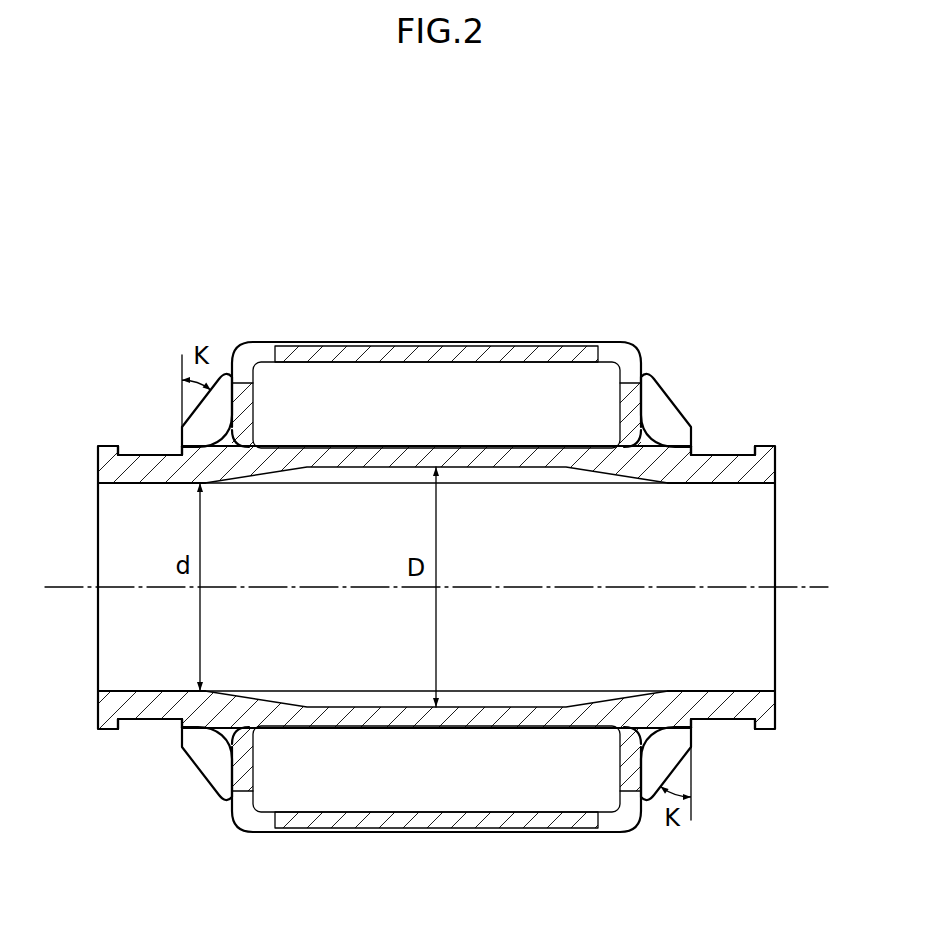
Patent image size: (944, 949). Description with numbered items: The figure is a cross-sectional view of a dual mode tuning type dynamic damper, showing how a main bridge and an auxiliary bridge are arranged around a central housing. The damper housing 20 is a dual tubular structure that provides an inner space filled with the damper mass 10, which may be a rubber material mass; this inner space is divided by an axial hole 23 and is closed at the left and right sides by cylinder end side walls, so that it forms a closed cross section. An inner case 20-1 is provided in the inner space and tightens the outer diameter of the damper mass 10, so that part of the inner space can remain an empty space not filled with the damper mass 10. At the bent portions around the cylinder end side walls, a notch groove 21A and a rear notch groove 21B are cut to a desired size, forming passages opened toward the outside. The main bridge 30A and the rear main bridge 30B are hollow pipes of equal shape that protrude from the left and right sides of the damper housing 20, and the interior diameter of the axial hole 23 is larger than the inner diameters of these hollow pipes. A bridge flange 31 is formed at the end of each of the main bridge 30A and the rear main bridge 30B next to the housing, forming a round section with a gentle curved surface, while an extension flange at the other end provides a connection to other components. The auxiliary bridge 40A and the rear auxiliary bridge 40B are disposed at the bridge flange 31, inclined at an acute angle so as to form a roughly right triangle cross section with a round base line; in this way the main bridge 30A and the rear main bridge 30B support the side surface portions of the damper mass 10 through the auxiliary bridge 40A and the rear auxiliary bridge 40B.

The damper mass 10 is at (590, 405).
The damper housing 20 is at (469, 343).
The inner case 20-1 is at (388, 355).
The notch groove 21A is at (260, 345).
The rear notch groove 21B is at (632, 355).
The axial hole 23 is at (482, 705).
The main bridge 30A is at (133, 475).
The rear main bridge 30B is at (722, 462).
The bridge flange 31 is at (192, 446).
The auxiliary bridge 40A is at (225, 375).
The rear auxiliary bridge 40B is at (655, 775).